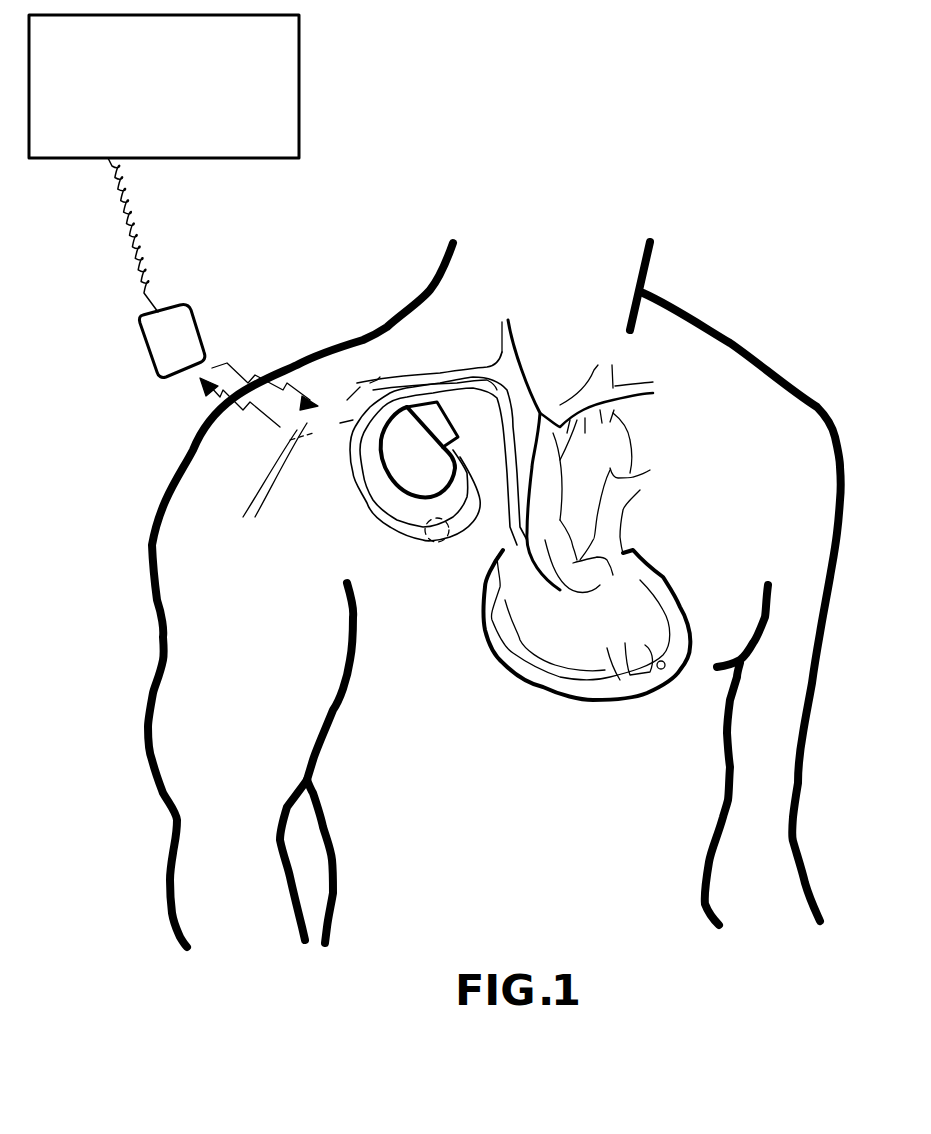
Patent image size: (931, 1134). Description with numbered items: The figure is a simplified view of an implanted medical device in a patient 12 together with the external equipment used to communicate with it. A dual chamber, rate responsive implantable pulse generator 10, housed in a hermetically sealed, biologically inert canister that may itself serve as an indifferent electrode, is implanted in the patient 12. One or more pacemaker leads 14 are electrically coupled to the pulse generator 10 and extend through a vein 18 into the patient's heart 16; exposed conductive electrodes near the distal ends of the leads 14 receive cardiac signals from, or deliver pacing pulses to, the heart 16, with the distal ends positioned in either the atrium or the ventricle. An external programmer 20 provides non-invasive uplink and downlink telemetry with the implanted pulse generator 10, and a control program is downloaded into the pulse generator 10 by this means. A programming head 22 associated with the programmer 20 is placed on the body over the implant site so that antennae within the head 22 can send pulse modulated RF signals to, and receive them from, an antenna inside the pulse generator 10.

The implantable pulse generator 10 is at (397, 477).
The patient 12 is at (777, 377).
The pacemaker leads 14 is at (437, 543).
The heart 16 is at (622, 700).
The vein 18 is at (353, 403).
The external programmer 20 is at (298, 97).
The programming head 22 is at (183, 320).